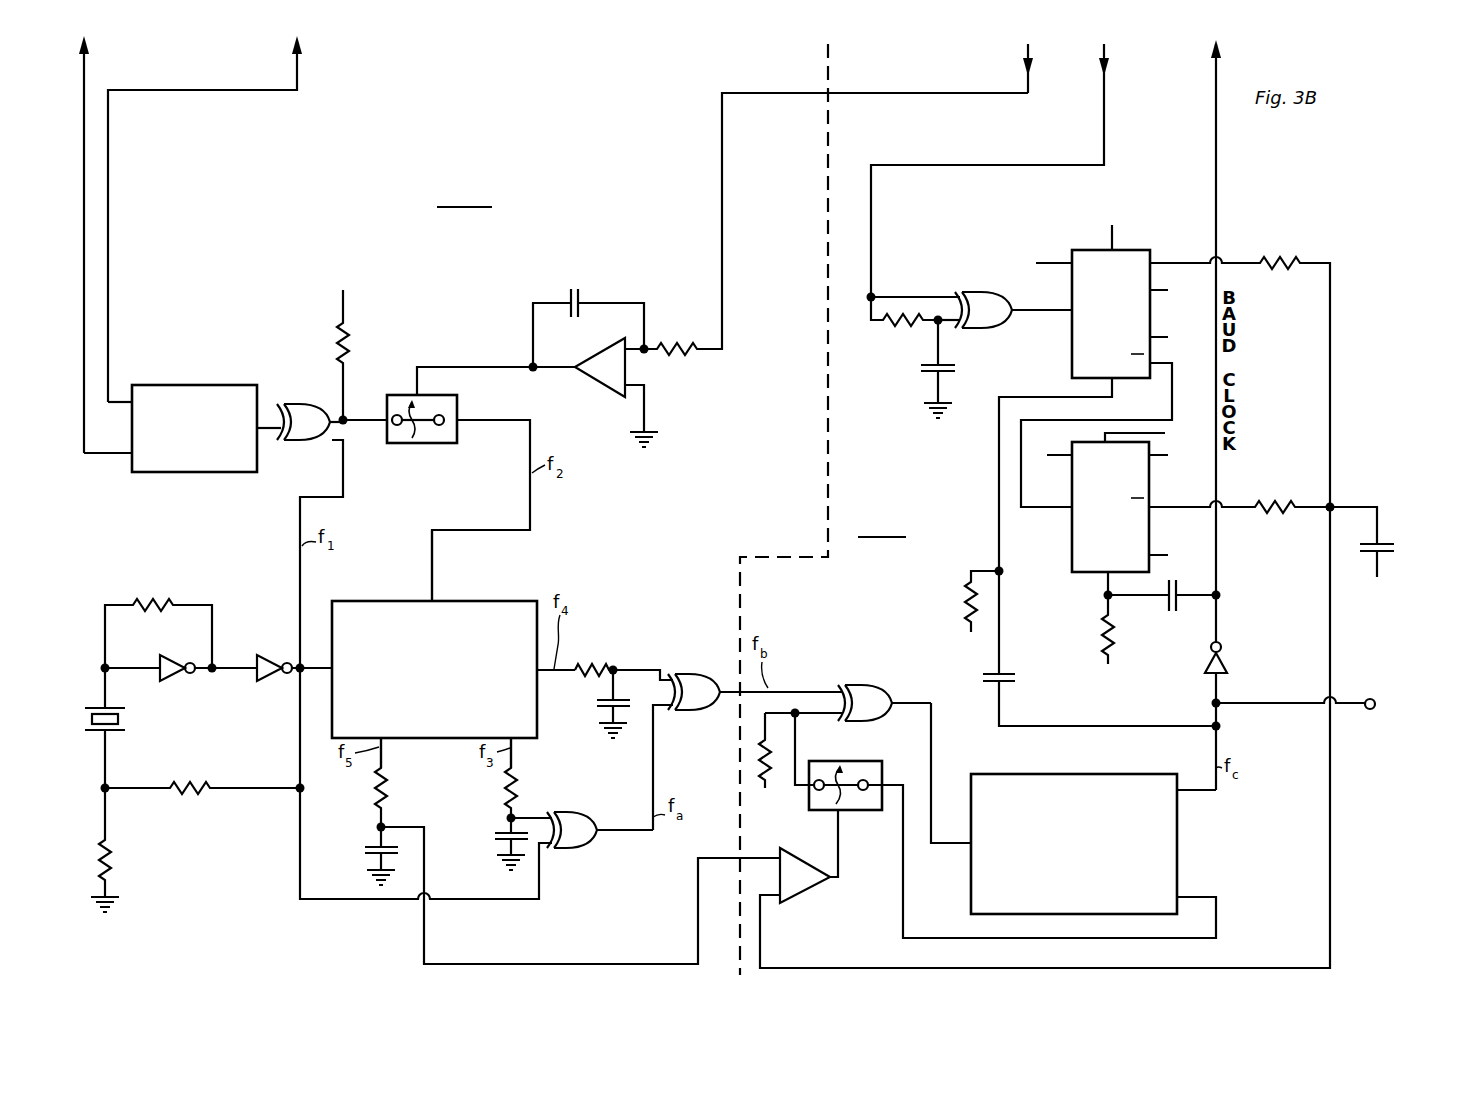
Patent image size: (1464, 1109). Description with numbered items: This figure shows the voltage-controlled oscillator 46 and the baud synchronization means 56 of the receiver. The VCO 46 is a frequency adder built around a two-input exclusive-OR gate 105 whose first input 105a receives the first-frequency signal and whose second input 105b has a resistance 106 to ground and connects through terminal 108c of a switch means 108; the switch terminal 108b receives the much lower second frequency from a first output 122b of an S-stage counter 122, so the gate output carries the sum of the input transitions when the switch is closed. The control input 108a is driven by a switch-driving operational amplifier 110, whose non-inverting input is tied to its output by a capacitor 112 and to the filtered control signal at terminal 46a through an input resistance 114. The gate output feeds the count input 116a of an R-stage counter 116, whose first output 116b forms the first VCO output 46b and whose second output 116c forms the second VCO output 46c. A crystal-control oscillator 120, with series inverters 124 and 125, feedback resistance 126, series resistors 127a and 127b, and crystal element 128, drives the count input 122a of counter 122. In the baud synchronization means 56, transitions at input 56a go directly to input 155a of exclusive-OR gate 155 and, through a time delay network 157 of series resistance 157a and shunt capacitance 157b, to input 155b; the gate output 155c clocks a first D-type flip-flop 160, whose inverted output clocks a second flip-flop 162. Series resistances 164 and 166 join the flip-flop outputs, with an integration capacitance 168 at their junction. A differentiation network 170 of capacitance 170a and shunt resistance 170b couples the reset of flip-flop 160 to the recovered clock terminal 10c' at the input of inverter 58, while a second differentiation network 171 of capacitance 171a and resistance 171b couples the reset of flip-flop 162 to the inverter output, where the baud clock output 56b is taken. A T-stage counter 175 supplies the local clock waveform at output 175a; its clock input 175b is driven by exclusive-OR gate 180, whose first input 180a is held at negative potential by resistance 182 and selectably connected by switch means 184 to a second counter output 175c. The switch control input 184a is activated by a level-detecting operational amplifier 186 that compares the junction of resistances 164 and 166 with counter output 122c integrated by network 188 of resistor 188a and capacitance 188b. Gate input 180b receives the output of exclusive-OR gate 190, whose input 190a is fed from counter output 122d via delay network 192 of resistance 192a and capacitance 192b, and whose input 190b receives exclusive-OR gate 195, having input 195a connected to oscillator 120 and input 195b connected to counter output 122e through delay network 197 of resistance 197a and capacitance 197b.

The VCO 46 is at (632, 509).
The baud synchronization means 56 is at (882, 525).
The synthesizer output terminal 46a is at (1026, 52).
The first VCO output 46b is at (87, 42).
The second VCO output 46c is at (300, 42).
The input of baud synchronization means 56a is at (1102, 52).
The baud clock signal output 56b is at (1214, 52).
The inverter means 58 is at (1226, 661).
The recovered clock output 10c' is at (1325, 723).
The exclusive-OR gate 105 is at (295, 444).
The first input of gate 105a is at (328, 454).
The second input of gate 105b is at (340, 416).
The resistance 106 is at (340, 340).
The switch means 108 is at (421, 445).
The control input of switch means 108a is at (432, 397).
The switch means terminal 108b is at (460, 423).
The switch means terminal 108c is at (389, 428).
The switch-driving operational amplifier 110 is at (600, 385).
The capacitor 112 is at (568, 294).
The input resistance 114 is at (690, 352).
The R-stage counter 116 is at (185, 385).
The count C input of R-stage counter 116a is at (263, 425).
The first output of R-stage counter 116b is at (129, 458).
The second output of R-stage counter 116c is at (125, 400).
The crystal-control oscillator 120 is at (212, 826).
The S-stage counter means 122 is at (538, 600).
The count C input of S-stage counter 122a is at (326, 664).
The first counter output 122b is at (438, 600).
The another output of S-stage counter 122c is at (373, 760).
The third output of S-stage counter 122d is at (542, 673).
The fourth output of S-stage counter 122e is at (516, 745).
The first inverter 124 is at (173, 660).
The second inverter 125 is at (272, 656).
The feedback resistance 126 is at (152, 599).
The resistor 127a is at (192, 782).
The resistor 127b is at (110, 857).
The crystal element 128 is at (126, 718).
The exclusive-OR gate 155 is at (983, 291).
The input of exclusive-OR gate 155a is at (957, 293).
The remaining input of exclusive-OR gate 155b is at (958, 326).
The exclusive-OR gate output 155c is at (1016, 318).
The time delay network 157 is at (911, 399).
The series resistance 157a is at (899, 326).
The shunt capacitance 157b is at (919, 373).
The first D-type flip-flop logic element 160 is at (1125, 249).
The second D-type flip-flop logic element 162 is at (1150, 488).
The resistance element 164 is at (1288, 261).
The resistance element 166 is at (1276, 505).
The integration capacitance 168 is at (1379, 543).
The differentiation network 170 is at (964, 548).
The differentiating capacitance 170a is at (997, 680).
The shunt resistance 170b is at (966, 609).
The second differentiation network 171 is at (1072, 618).
The series differentiation capacitance 171a is at (1167, 611).
The shunt delay resistance 171b is at (1097, 641).
The T-stage counter means 175 is at (1111, 773).
The output of T-stage counter 175a is at (1180, 793).
The clock C input of T-stage counter 175b is at (954, 814).
The additional output of T-stage counter 175c is at (1180, 897).
The first two-input exclusive-OR gate 180 is at (870, 691).
The first input of gate 180a is at (840, 717).
The exclusive-OR gate input 180b is at (837, 685).
The resistance 182 is at (770, 768).
The switch means 184 is at (882, 769).
The control input of switch means 184a is at (839, 813).
The level-detecting operational amplifier 186 is at (804, 890).
The integrating network 188 is at (341, 830).
The series integrating resistor 188a is at (385, 806).
The shunt integrating capacitance 188b is at (368, 829).
The second two-input exclusive-OR gate 190 is at (706, 702).
The first input of second gate 190a is at (662, 678).
The second gate input 190b is at (660, 713).
The time delay network 192 is at (633, 625).
The series delay resistance 192a is at (588, 668).
The shunt delay capacitance 192b is at (606, 706).
The third two-input exclusive-OR gate 195 is at (593, 823).
The first input of third gate 195a is at (556, 845).
The second input of third gate 195b is at (541, 814).
The time-delay network 197 is at (481, 803).
The series delay resistance 197a is at (516, 790).
The shunt delay capacitance 197b is at (501, 830).